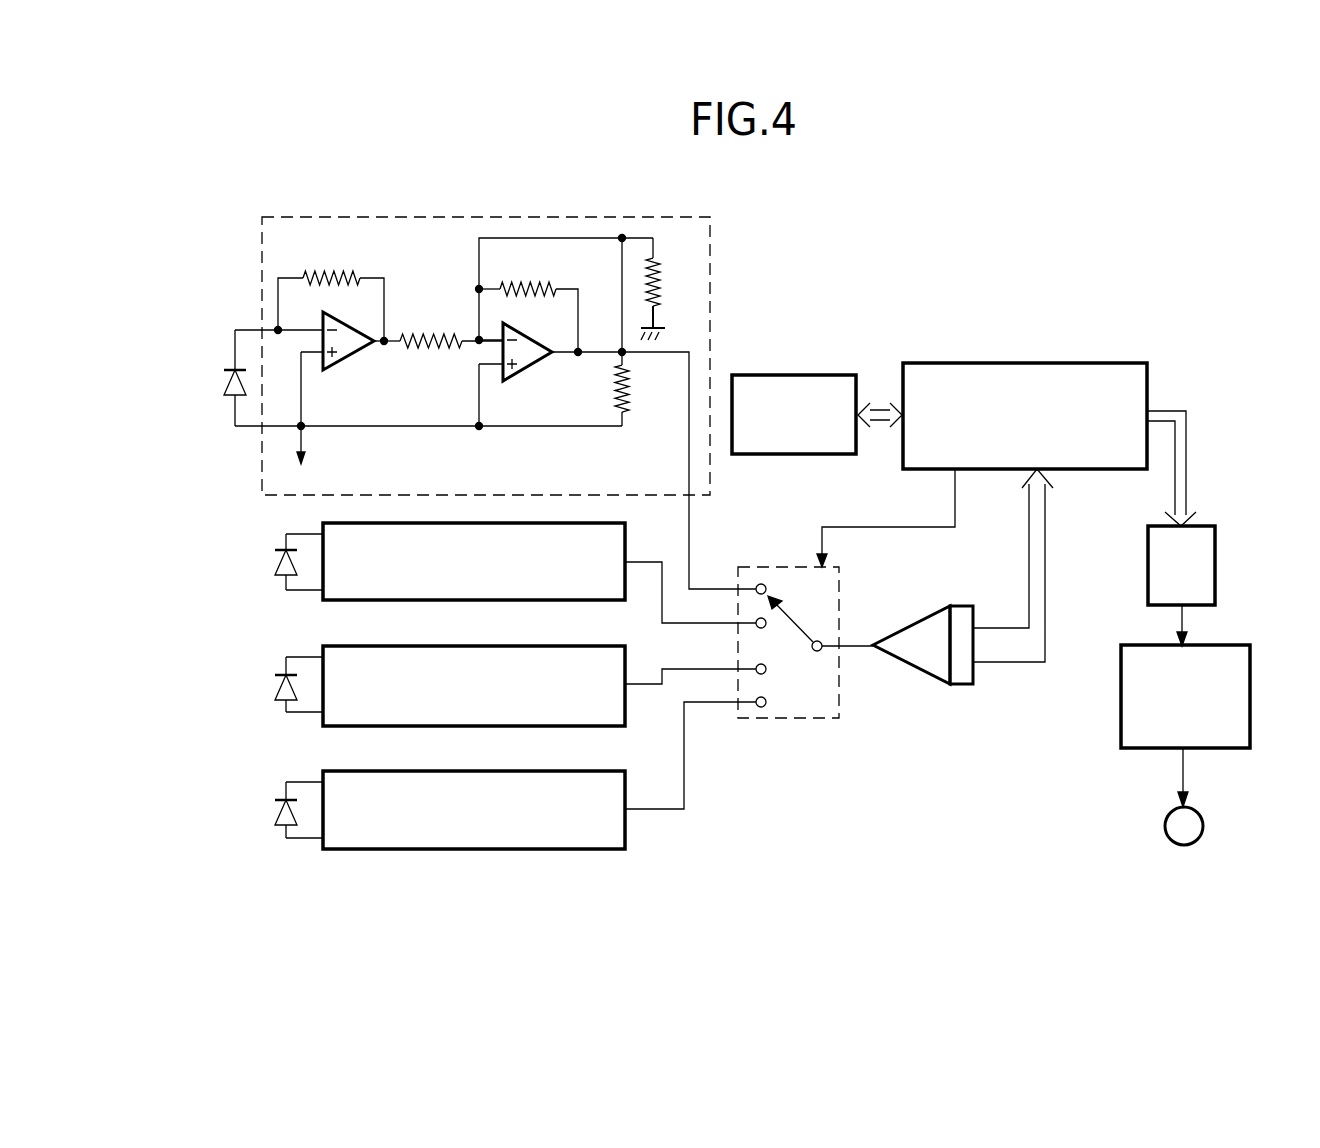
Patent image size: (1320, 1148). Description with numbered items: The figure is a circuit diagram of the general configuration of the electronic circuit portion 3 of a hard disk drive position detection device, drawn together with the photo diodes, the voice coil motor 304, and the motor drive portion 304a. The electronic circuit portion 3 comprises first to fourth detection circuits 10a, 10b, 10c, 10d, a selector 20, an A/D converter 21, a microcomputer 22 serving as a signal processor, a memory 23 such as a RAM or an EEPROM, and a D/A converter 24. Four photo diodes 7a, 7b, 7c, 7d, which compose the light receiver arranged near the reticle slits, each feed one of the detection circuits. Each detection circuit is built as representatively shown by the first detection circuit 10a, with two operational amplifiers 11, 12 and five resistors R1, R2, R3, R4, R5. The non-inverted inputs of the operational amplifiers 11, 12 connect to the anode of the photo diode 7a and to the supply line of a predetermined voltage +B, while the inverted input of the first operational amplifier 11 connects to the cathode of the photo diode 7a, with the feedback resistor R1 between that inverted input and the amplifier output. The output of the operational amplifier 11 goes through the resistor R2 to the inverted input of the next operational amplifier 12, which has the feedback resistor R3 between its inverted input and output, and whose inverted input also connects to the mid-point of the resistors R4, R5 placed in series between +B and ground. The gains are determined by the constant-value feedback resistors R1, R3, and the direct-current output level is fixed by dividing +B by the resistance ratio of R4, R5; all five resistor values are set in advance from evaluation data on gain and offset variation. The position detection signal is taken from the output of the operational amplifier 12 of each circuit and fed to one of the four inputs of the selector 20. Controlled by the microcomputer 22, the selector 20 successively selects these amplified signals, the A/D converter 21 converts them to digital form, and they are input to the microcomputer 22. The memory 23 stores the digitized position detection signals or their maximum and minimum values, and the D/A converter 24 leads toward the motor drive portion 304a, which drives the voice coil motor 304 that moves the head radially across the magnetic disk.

The electronic circuit portion 3 is at (289, 182).
The first detection circuit 10a is at (549, 199).
The second detection circuit 10b is at (341, 602).
The third detection circuit 10c is at (341, 728).
The fourth detection circuit 10d is at (341, 851).
The photo diode 7a is at (224, 381).
The photo diode 7b is at (275, 560).
The photo diode 7c is at (275, 685).
The photo diode 7d is at (275, 808).
The first operational amplifier 11 is at (352, 361).
The operational amplifier 12 is at (535, 370).
The feedback resistor R1 is at (331, 289).
The resistor R2 is at (431, 326).
The feedback resistor R3 is at (528, 302).
The resistor R4 is at (638, 388).
The resistor R5 is at (668, 289).
The selector 20 is at (785, 565).
The A/D converter 21 is at (931, 683).
The microcomputer 22 is at (988, 362).
The memory 23 is at (800, 374).
The D/A converter 24 is at (1206, 527).
The motor drive portion 304a is at (1120, 722).
The voice coil motor 304 is at (1184, 846).